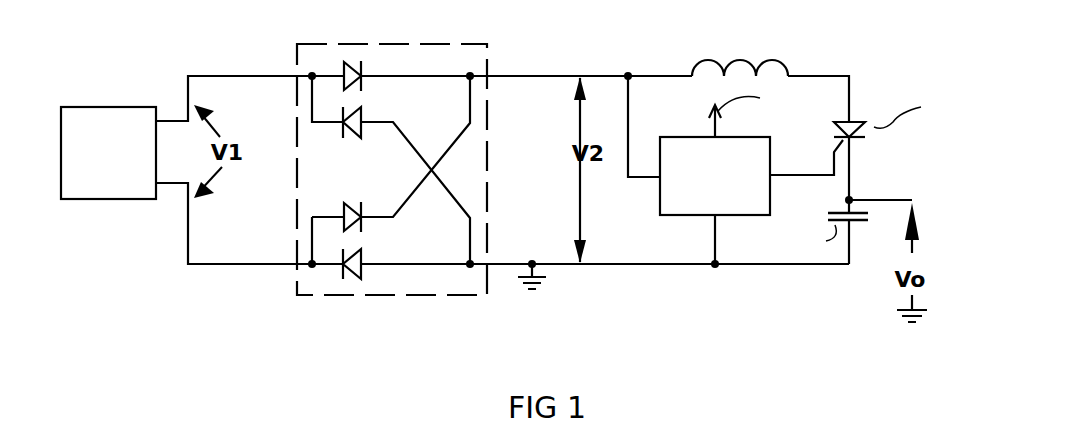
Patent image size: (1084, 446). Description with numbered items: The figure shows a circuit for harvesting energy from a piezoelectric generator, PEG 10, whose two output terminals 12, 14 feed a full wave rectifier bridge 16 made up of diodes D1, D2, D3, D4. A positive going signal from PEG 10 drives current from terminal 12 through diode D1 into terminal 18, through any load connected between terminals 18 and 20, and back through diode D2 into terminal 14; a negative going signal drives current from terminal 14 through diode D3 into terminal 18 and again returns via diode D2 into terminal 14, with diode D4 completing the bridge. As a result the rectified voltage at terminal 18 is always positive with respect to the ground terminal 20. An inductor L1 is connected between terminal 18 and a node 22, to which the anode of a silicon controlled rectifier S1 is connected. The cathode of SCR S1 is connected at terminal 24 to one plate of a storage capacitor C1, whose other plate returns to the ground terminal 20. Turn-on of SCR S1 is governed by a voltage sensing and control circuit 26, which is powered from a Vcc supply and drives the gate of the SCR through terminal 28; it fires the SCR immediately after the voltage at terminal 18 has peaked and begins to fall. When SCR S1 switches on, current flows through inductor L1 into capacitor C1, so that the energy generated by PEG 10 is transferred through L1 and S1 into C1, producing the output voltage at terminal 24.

The PEG 10 is at (127, 107).
The terminal 12 is at (207, 75).
The terminal 14 is at (236, 266).
The diode bridge rectifier 16 is at (392, 152).
The terminal 18 is at (470, 74).
The ground terminal 20 is at (536, 268).
The node 22 is at (851, 76).
The terminal 24 is at (852, 194).
The voltage sensing and control circuit 26 is at (695, 216).
The terminal 28 is at (831, 165).
The diode D1 is at (362, 71).
The diode D2 is at (360, 256).
The diode D3 is at (365, 216).
The diode D4 is at (363, 124).
The inductor L1 is at (740, 56).
The storage capacitor C1 is at (831, 232).
The silicon controlled rectifier S1 is at (891, 144).